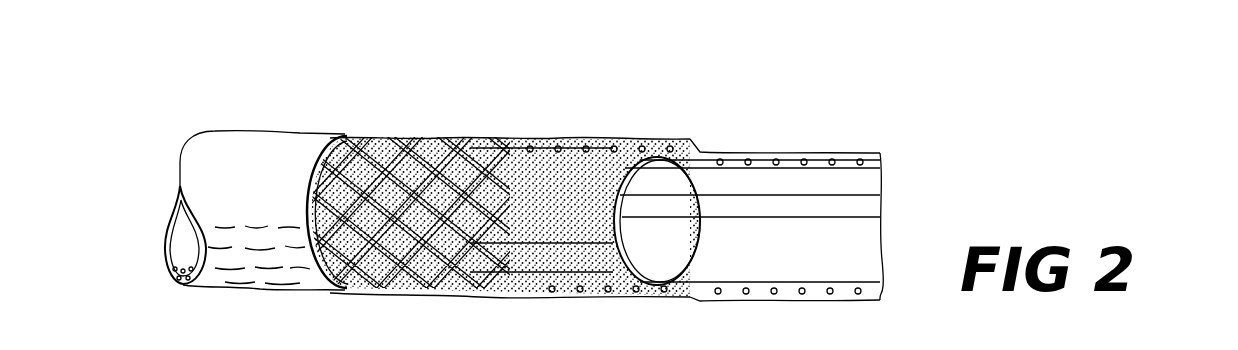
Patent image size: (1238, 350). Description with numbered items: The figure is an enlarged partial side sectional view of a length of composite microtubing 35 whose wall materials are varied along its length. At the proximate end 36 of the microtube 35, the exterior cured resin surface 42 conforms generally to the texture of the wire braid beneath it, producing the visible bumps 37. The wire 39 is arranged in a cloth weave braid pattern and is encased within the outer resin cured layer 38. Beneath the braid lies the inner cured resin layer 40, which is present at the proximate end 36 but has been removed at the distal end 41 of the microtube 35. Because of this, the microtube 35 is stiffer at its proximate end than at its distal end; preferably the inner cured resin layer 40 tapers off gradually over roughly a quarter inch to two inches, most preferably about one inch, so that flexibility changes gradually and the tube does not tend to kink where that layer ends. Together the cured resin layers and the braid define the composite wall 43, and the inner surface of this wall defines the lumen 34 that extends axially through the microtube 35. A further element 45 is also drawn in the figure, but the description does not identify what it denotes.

The catheter tubing assembly 34 is at (135, 220).
The proximal section 35 is at (255, 100).
The folded loop of outer sleeve 36 is at (180, 184).
The outer sleeve 37 is at (258, 130).
The braid 38 is at (357, 137).
The polymer layer 39 is at (437, 140).
The inner liner ring 40 is at (640, 156).
The inner tube 41 is at (880, 160).
The sleeve surface 42 is at (260, 273).
The loop end 43 is at (183, 283).
The stitching loops 45 is at (559, 248).